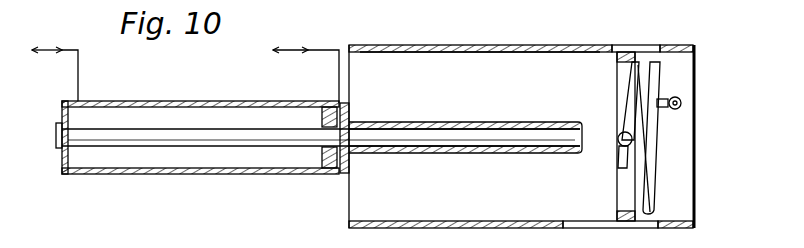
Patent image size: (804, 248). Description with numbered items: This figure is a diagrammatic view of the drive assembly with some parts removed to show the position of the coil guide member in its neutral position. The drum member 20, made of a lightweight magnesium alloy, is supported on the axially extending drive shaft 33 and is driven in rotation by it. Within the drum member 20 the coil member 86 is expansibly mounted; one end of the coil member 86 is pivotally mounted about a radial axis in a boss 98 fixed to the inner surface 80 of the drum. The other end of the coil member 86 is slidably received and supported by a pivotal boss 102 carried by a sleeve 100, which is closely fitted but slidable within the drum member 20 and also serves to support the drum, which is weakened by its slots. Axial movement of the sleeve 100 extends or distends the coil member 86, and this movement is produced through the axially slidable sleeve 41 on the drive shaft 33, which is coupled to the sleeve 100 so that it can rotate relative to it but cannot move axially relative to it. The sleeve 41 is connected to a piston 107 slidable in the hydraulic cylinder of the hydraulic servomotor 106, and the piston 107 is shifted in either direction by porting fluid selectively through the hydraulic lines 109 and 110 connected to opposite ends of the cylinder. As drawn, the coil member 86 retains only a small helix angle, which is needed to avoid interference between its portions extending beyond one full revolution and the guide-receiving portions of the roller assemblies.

The drum member 20 is at (447, 45).
The drive shaft 33 is at (395, 148).
The axially slidable sleeve 41 is at (454, 153).
The inner surface 80 is at (478, 52).
The coil member 86 is at (655, 137).
The boss 98 is at (681, 103).
The sleeve 100 is at (623, 52).
The pivotal boss 102 is at (618, 135).
The hydraulic servomotor 106 is at (172, 101).
The piston 107 is at (322, 170).
The hydraulic line 109 is at (70, 46).
The hydraulic line 110 is at (297, 48).